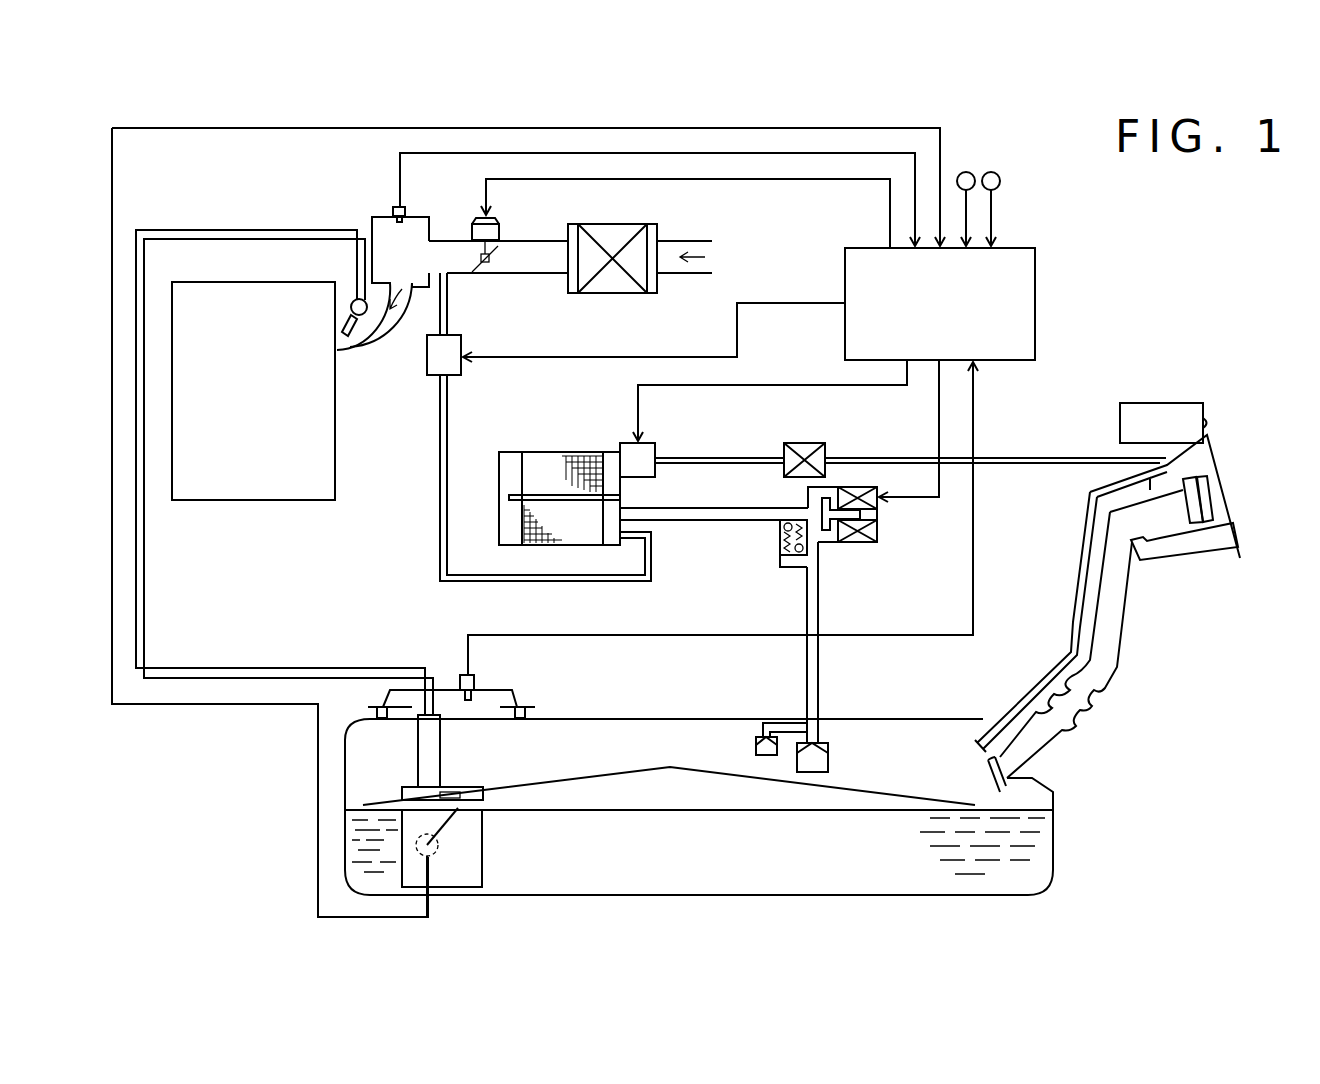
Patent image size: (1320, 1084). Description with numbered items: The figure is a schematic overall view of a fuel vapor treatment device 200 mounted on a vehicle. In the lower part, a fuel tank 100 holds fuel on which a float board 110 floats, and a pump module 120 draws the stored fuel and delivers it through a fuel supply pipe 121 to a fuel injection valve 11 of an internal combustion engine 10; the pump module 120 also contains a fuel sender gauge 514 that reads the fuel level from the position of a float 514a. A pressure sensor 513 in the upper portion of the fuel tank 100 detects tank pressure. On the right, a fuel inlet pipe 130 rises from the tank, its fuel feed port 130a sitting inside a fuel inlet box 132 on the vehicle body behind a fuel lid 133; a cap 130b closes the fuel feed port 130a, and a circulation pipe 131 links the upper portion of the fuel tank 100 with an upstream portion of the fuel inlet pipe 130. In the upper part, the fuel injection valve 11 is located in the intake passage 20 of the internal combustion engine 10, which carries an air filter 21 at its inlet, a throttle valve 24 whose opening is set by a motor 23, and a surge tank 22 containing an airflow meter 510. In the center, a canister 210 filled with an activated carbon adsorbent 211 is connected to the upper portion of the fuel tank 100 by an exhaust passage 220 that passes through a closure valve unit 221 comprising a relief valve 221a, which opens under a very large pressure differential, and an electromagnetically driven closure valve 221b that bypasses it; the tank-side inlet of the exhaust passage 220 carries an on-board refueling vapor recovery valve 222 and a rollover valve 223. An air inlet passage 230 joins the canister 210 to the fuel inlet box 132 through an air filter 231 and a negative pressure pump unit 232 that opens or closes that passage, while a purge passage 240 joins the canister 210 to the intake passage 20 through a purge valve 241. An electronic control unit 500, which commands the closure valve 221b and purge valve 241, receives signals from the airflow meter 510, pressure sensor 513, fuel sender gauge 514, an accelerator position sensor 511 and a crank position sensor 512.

The internal combustion engine 10 is at (335, 470).
The fuel injection valve 11 is at (345, 337).
The intake passage 20 is at (515, 273).
The air filter 21 is at (620, 226).
The surge tank 22 is at (372, 226).
The motor 23 is at (500, 222).
The throttle valve 24 is at (495, 258).
The fuel tank 100 is at (620, 719).
The float board 110 is at (568, 777).
The pump module 120 is at (402, 798).
The fuel supply pipe 121 is at (275, 667).
The fuel inlet pipe 130 is at (1120, 645).
The fuel feed port 130a is at (1214, 521).
The cap 130b is at (1212, 500).
The circulation pipe 131 is at (1072, 622).
The fuel inlet box 132 is at (1185, 558).
The fuel lid 133 is at (1216, 464).
The fuel vapor treatment device 200 is at (626, 416).
The canister 210 is at (548, 452).
The adsorbent 211 is at (522, 515).
The exhaust passage 220 is at (807, 590).
The closure valve unit 221 is at (812, 553).
The relief valve 221a is at (779, 542).
The closure valve 221b is at (858, 543).
The on-board refueling vapor recovery (ORVR) valve 222 is at (829, 762).
The rollover valve 223 is at (756, 746).
The air inlet passage 230 is at (1012, 457).
The air filter 231 is at (824, 445).
The negative pressure pump unit 232 is at (650, 445).
The purge passage 240 is at (440, 567).
The purge valve 241 is at (462, 340).
The electronic control unit 500 is at (1010, 248).
The airflow meter 510 is at (393, 210).
The accelerator position sensor 511 is at (966, 172).
The crank position sensor 512 is at (1000, 175).
The pressure sensor 513 is at (474, 678).
The fuel sender gauge 514 is at (437, 853).
The float 514a is at (455, 790).